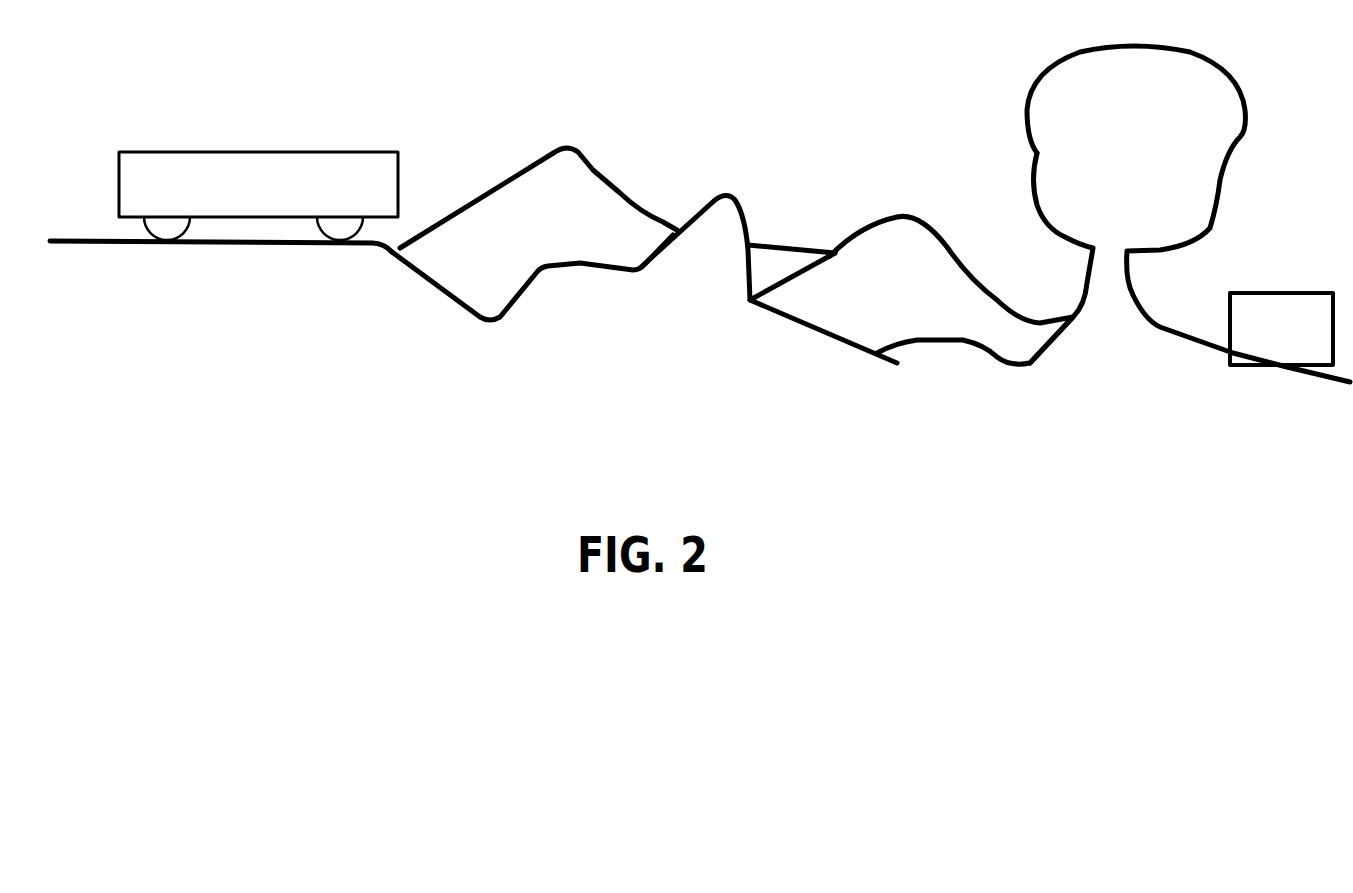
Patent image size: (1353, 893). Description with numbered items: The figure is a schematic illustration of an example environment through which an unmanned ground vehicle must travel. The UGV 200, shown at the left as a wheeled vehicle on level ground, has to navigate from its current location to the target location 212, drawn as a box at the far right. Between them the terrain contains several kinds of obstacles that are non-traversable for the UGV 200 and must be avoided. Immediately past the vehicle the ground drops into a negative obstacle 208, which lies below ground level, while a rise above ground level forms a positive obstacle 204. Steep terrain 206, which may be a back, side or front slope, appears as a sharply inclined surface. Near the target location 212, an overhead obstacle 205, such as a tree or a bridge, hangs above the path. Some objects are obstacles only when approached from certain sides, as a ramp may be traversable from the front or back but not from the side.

The UGV 200 is at (360, 144).
The positive obstacle 204 is at (757, 195).
The overhead obstacle 205 is at (1251, 72).
The steep terrain 206 is at (608, 172).
The negative obstacle 208 is at (480, 319).
The target location 212 is at (1254, 281).